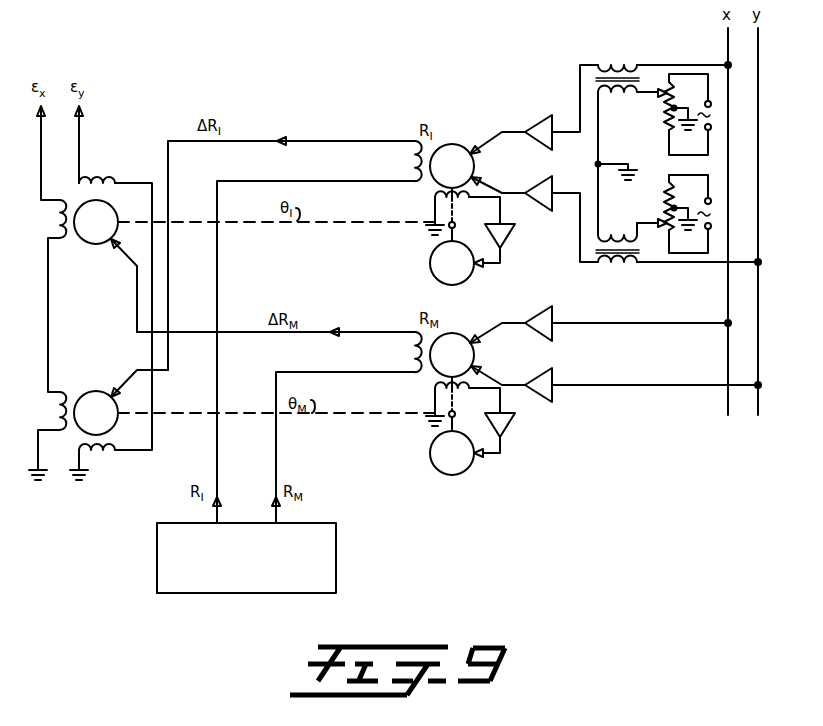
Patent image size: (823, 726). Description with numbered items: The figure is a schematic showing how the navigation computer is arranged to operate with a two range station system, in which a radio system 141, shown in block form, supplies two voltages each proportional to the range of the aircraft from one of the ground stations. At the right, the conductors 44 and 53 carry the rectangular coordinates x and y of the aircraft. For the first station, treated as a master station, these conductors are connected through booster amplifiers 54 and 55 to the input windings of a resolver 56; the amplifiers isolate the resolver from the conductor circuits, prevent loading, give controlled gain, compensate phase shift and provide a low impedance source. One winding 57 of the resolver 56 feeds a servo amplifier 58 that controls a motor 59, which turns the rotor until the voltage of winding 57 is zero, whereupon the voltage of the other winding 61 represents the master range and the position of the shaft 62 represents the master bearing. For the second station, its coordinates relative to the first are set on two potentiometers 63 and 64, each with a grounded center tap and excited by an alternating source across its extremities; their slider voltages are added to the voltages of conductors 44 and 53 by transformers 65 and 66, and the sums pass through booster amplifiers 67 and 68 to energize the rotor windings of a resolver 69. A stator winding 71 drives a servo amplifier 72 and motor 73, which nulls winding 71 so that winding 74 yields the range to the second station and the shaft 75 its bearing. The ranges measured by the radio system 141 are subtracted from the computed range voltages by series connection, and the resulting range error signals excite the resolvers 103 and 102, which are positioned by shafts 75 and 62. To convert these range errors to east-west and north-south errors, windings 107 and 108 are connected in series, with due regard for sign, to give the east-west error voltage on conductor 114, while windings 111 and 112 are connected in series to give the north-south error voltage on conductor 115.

The conductor 44 is at (726, 30).
The conductor 53 is at (759, 75).
The booster amplifier 54 is at (560, 304).
The booster amplifier 55 is at (553, 396).
The resolver 56 is at (444, 335).
The winding 57 is at (436, 387).
The servo amplifier 58 is at (514, 421).
The motor 59 is at (470, 468).
The winding 61 is at (414, 364).
The shaft 62 is at (410, 400).
The potentiometer 63 is at (668, 124).
The potentiometer 64 is at (668, 204).
The transformer 65 is at (623, 61).
The transformer 66 is at (634, 262).
The booster amplifier 67 is at (536, 119).
The booster amplifier 68 is at (536, 178).
The resolver 69 is at (448, 127).
The stator winding 71 is at (436, 196).
The servo amplifier 72 is at (514, 232).
The motor 73 is at (470, 278).
The winding 74 is at (413, 167).
The shaft 75 is at (389, 222).
The resolver 102 is at (103, 391).
The resolver 103 is at (101, 243).
The winding 107 is at (95, 453).
The winding 108 is at (116, 166).
The winding 111 is at (57, 220).
The winding 112 is at (57, 414).
The conductor 114 is at (79, 140).
The conductor 115 is at (41, 140).
The radio system 141 is at (337, 531).